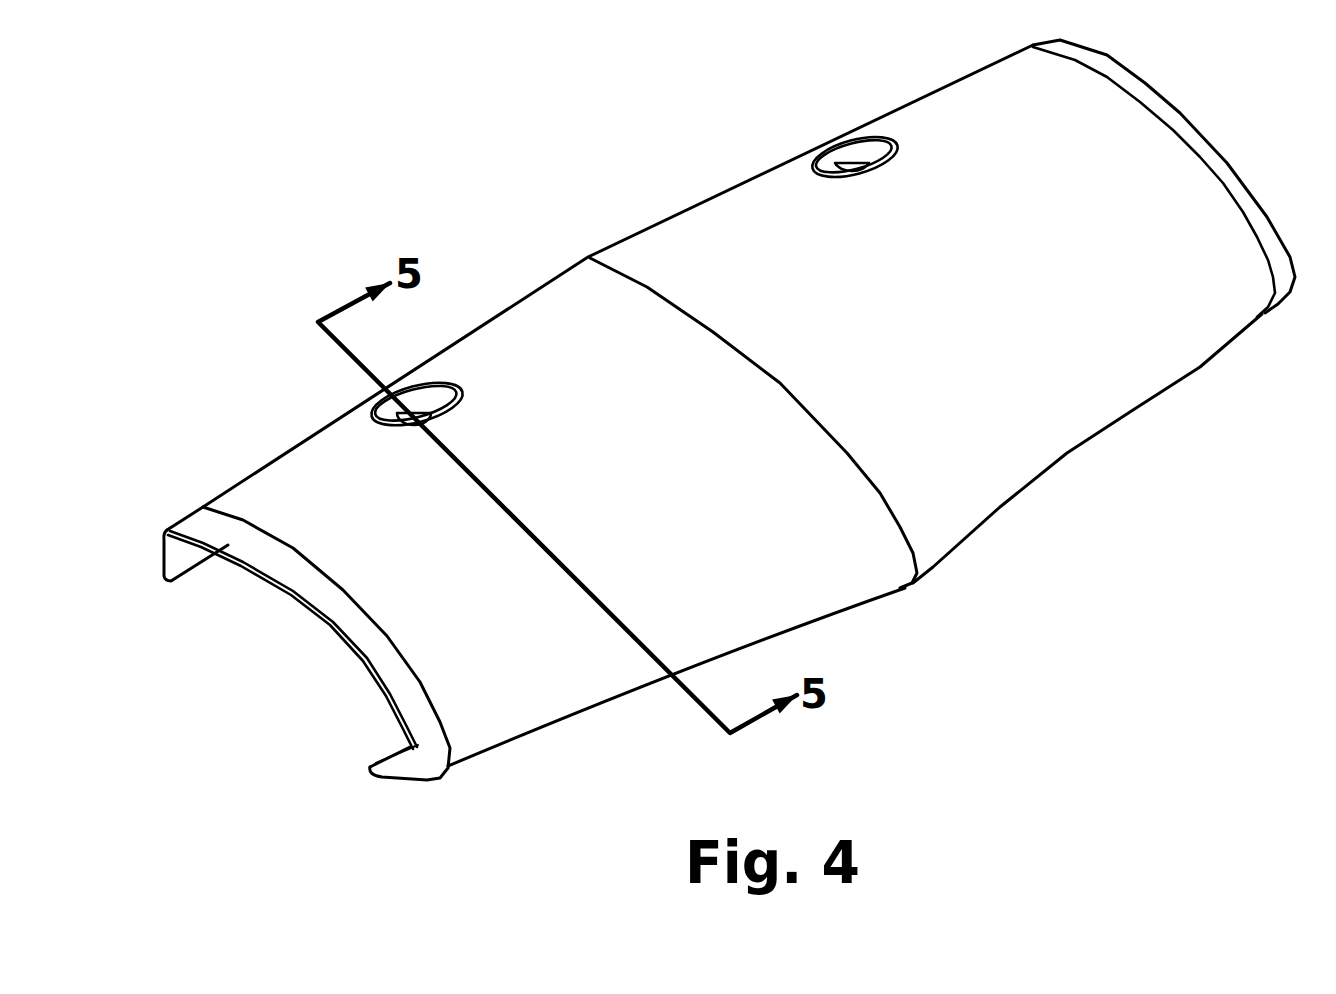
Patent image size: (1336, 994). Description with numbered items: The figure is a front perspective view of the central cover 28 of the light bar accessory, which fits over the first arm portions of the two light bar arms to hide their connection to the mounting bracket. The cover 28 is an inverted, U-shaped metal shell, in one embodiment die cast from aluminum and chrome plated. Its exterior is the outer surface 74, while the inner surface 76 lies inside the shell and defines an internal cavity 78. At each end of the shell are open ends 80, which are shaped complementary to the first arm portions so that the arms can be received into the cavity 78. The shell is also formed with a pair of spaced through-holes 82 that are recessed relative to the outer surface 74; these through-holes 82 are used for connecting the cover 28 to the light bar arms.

The central cover 28 is at (700, 243).
The outer surface 74 is at (975, 362).
The inner surface 76 is at (193, 556).
The internal cavity 78 is at (370, 721).
The open ends 80 is at (1192, 104).
The through-holes 82 is at (856, 163).